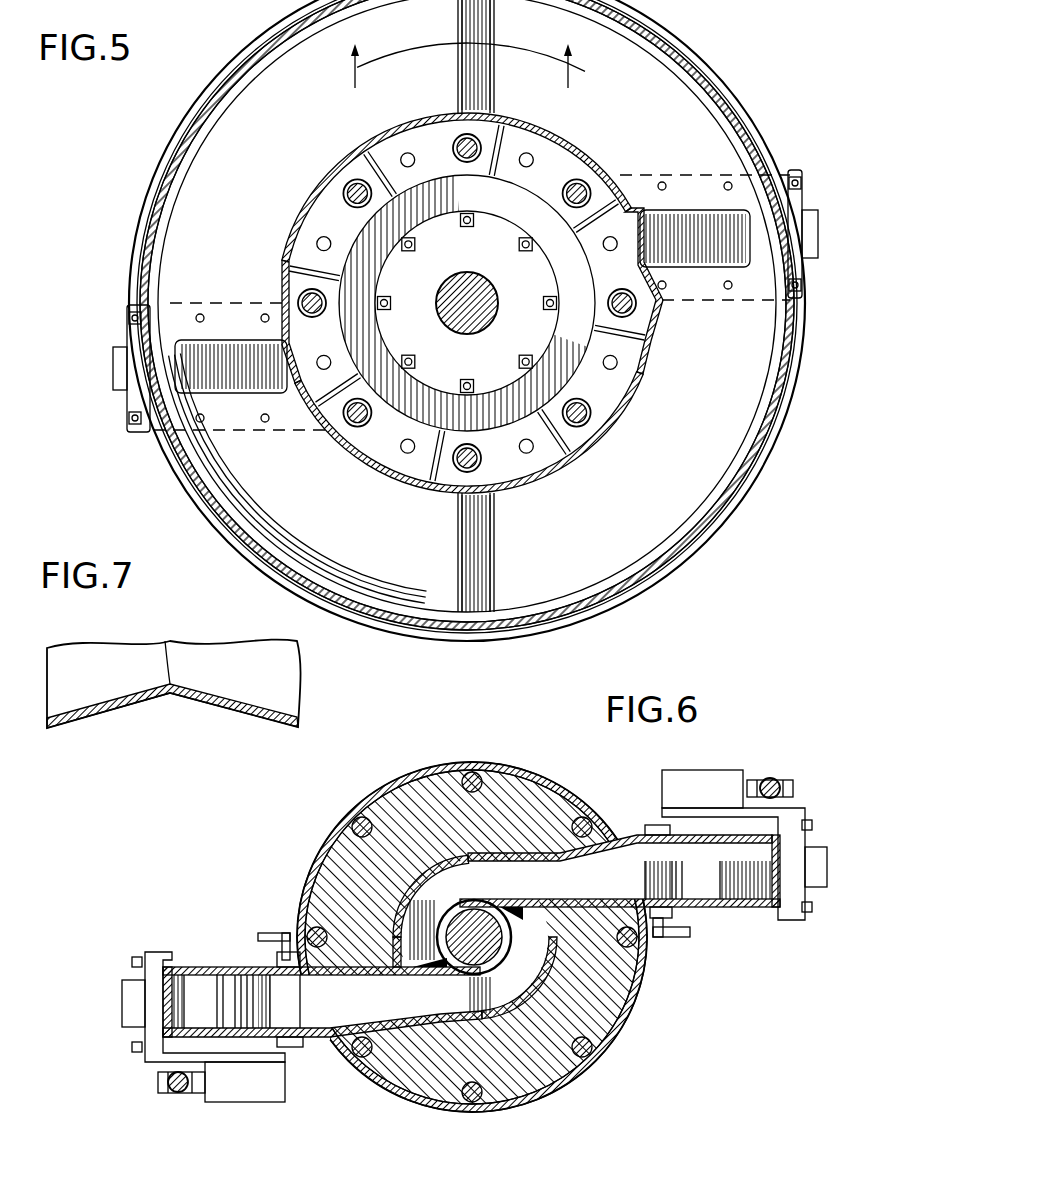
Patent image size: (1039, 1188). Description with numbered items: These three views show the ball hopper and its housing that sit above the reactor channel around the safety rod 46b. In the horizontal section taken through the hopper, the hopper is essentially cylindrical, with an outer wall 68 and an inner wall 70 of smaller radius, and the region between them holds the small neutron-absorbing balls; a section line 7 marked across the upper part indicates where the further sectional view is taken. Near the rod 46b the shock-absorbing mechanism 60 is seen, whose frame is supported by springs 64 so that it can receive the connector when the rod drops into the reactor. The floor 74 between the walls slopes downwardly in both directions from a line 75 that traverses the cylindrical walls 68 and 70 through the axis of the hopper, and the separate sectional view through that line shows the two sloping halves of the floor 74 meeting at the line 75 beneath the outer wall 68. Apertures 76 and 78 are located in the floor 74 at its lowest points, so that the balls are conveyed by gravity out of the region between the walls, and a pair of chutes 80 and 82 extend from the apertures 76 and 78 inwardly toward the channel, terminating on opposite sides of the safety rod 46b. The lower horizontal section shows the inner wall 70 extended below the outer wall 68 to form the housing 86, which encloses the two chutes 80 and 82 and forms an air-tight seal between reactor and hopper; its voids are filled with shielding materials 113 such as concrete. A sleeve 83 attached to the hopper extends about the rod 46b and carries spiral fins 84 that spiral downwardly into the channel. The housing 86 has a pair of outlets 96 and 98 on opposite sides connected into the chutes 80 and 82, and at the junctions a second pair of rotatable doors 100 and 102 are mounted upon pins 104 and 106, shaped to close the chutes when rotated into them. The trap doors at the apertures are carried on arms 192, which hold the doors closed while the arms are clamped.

In FIG. 5, the section line 7— 7 is at (463, 66).
In FIG. 5, the safety rod 46b is at (455, 318).
In FIG. 6, the safety rod 46b is at (482, 922).
In FIG. 5, the shock-absorbing mechanism 60 is at (328, 190).
In FIG. 5, the springs 64 is at (355, 420).
In FIG. 5, the outer wall 68 is at (718, 512).
In FIG. 7, the outer wall 68 is at (268, 626).
In FIG. 5, the inner wall 70 is at (556, 479).
In FIG. 5, the floor 74 is at (676, 122).
In FIG. 7, the floor 74 is at (113, 722).
In FIG. 5, the line 75 is at (458, 548).
In FIG. 7, the line 75 is at (166, 648).
In FIG. 5, the aperture 76 is at (722, 213).
In FIG. 5, the aperture 78 is at (205, 340).
In FIG. 5, the chute 80 is at (720, 255).
In FIG. 6, the chute 80 is at (540, 842).
In FIG. 5, the chute 82 is at (262, 380).
In FIG. 6, the chute 82 is at (365, 1070).
In FIG. 6, the sleeve 83 is at (443, 921).
In FIG. 6, the spiral fins 84 is at (470, 993).
In FIG. 6, the housing 86 is at (570, 1075).
In FIG. 5, the outlet 96 is at (810, 233).
In FIG. 6, the outlet 96 is at (812, 852).
In FIG. 5, the outlet 98 is at (113, 380).
In FIG. 6, the outlet 98 is at (132, 1007).
In FIG. 6, the rotatable door 100 is at (710, 893).
In FIG. 6, the rotatable door 102 is at (235, 990).
In FIG. 6, the pin 104 is at (678, 940).
In FIG. 6, the pin 106 is at (283, 933).
In FIG. 6, the shielding materials 113 is at (605, 1008).
In FIG. 6, the arms 192 is at (781, 786).